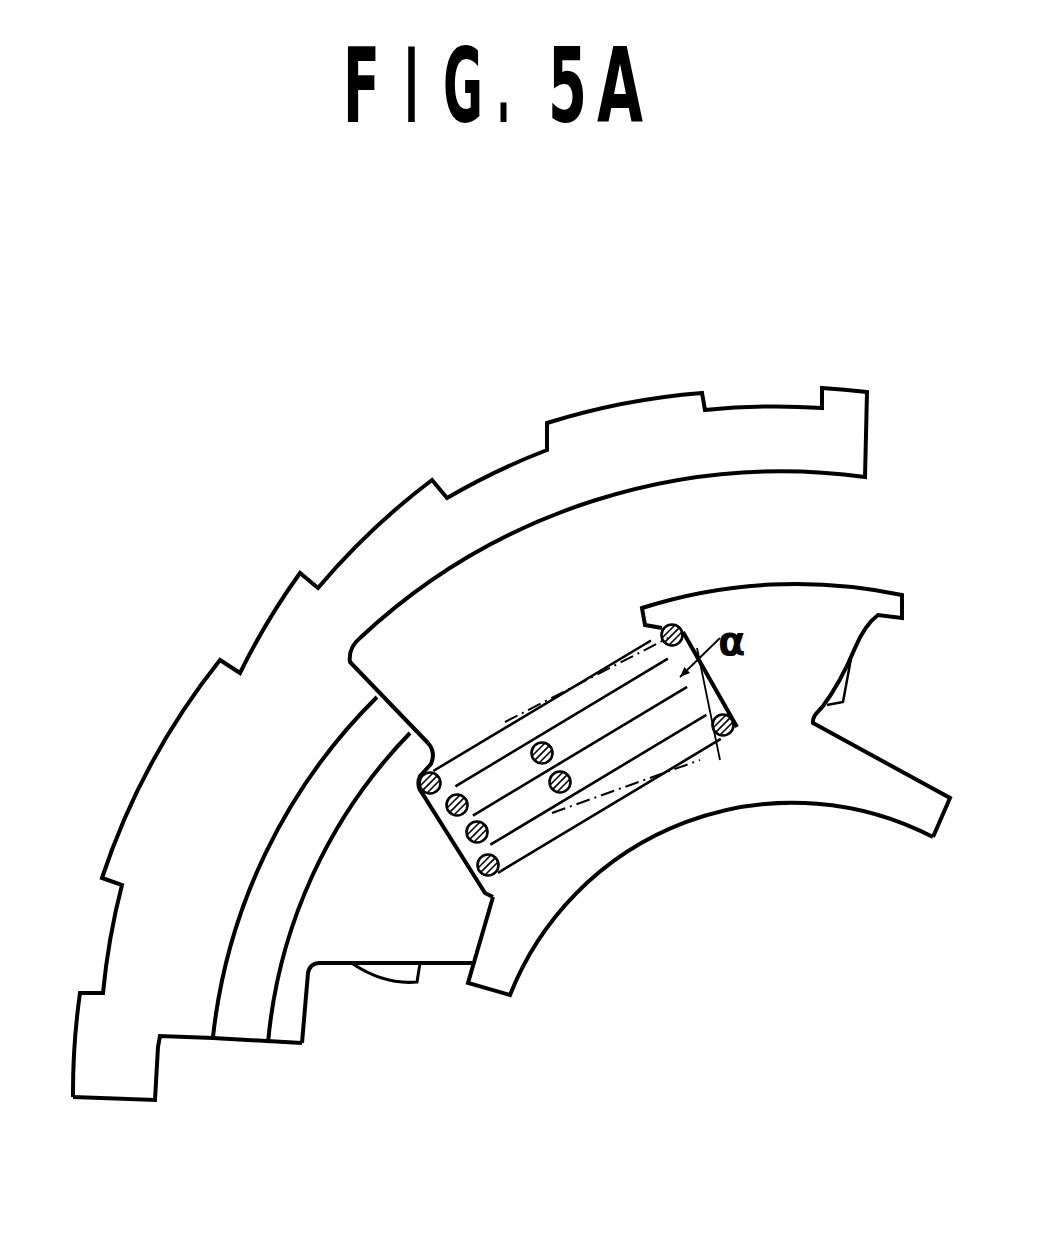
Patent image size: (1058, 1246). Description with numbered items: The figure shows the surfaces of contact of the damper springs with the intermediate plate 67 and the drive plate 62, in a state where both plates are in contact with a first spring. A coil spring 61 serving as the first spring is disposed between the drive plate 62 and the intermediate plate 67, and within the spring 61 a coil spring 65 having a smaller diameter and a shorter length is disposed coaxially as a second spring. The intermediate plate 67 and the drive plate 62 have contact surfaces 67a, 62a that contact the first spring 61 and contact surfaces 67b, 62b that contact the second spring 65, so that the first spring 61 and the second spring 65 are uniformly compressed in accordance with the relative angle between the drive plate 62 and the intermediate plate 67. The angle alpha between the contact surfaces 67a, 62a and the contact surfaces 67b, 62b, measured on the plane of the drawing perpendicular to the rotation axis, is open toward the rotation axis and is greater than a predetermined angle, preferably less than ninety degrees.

The drive plate 62 is at (193, 717).
The coil spring (first spring) 61 is at (523, 713).
The coil spring (second spring) 65 is at (528, 822).
The contact surface 62a is at (516, 890).
The contact surface 62b is at (478, 788).
The intermediate plate 67 is at (868, 597).
The contact surface 67a is at (660, 634).
The contact surface 67b is at (712, 692).